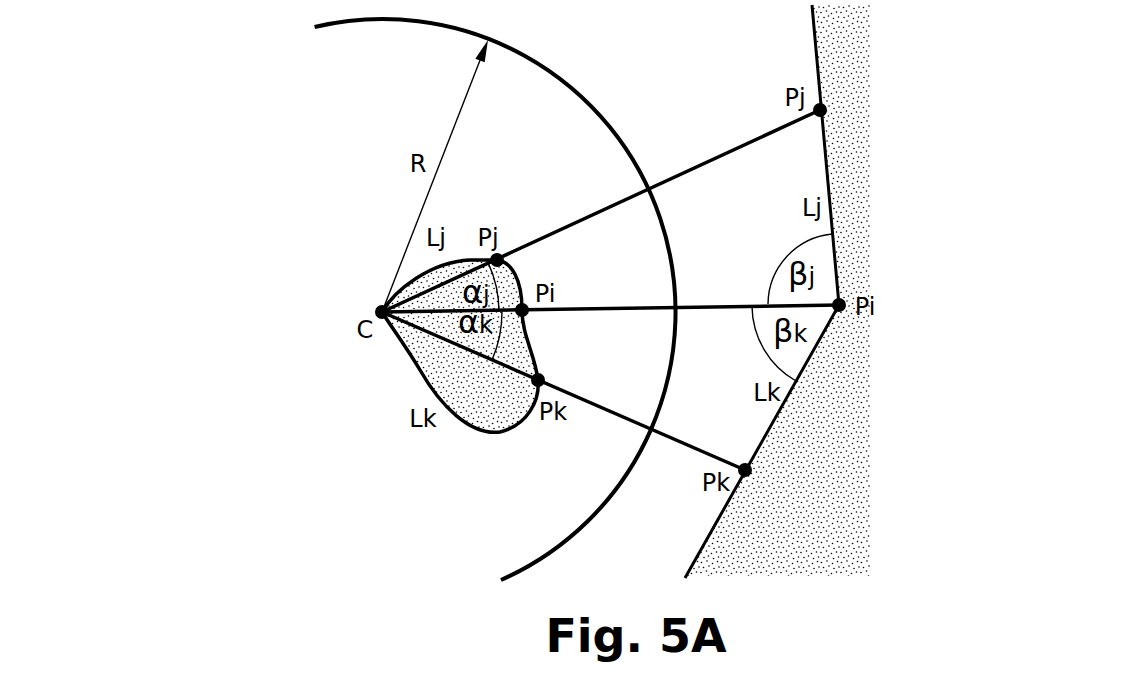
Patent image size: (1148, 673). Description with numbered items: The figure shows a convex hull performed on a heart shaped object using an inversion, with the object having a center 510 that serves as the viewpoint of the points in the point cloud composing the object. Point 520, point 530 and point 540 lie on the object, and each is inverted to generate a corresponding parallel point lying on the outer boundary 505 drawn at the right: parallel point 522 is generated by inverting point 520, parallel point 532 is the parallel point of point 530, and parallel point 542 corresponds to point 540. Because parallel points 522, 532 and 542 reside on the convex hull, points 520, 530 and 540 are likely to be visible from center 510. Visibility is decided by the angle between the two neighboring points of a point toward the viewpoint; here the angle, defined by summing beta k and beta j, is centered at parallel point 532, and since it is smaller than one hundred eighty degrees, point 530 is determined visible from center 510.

The boundary surface 505 is at (827, 180).
The center 510 is at (380, 305).
The point 520 is at (505, 250).
The parallel point 522 is at (826, 102).
The point 530 is at (528, 315).
The parallel point 532 is at (852, 292).
The point 540 is at (543, 378).
The parallel point 542 is at (755, 462).